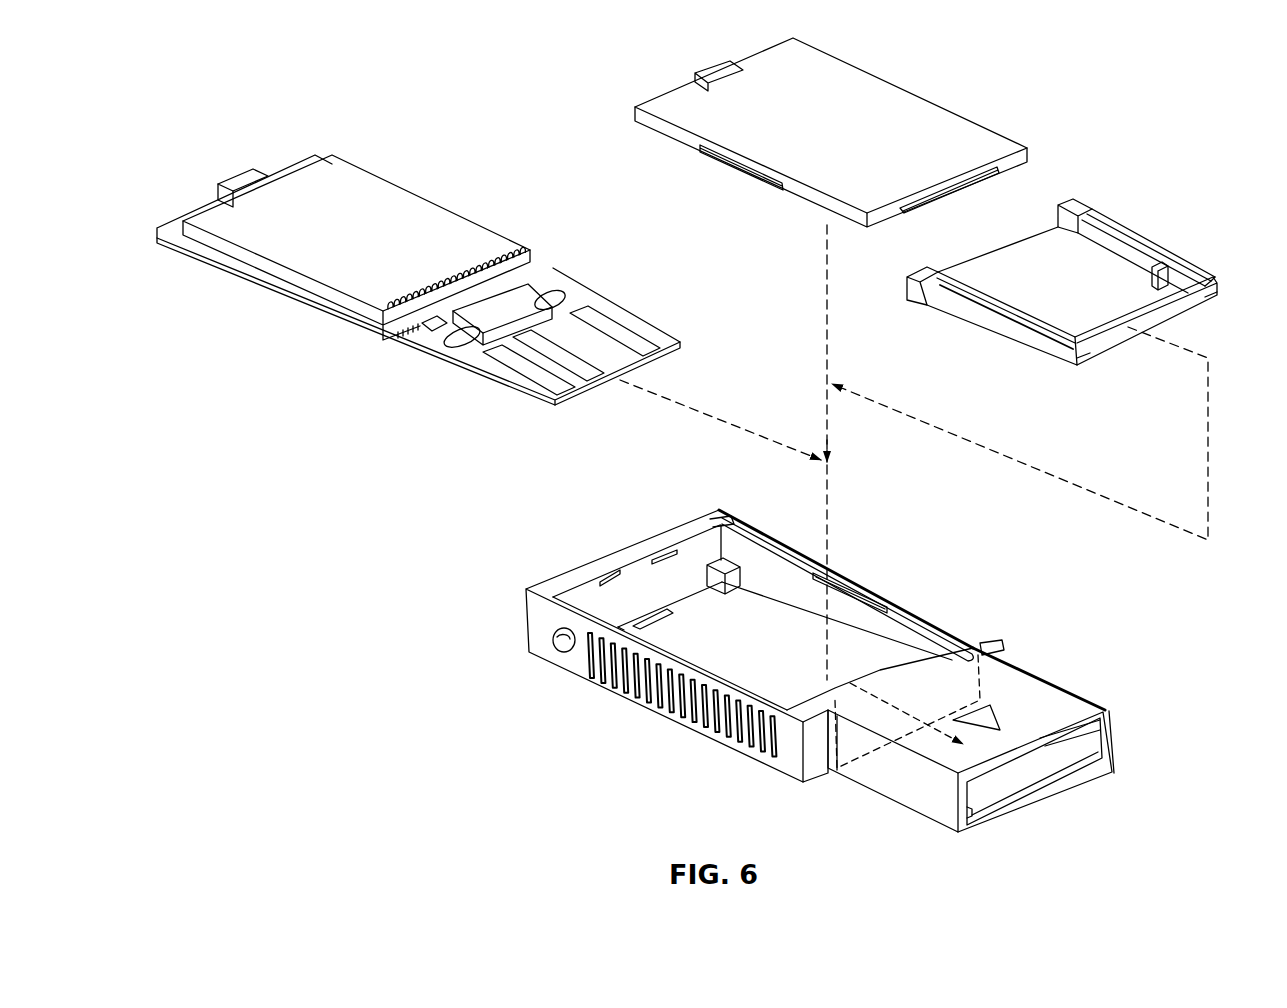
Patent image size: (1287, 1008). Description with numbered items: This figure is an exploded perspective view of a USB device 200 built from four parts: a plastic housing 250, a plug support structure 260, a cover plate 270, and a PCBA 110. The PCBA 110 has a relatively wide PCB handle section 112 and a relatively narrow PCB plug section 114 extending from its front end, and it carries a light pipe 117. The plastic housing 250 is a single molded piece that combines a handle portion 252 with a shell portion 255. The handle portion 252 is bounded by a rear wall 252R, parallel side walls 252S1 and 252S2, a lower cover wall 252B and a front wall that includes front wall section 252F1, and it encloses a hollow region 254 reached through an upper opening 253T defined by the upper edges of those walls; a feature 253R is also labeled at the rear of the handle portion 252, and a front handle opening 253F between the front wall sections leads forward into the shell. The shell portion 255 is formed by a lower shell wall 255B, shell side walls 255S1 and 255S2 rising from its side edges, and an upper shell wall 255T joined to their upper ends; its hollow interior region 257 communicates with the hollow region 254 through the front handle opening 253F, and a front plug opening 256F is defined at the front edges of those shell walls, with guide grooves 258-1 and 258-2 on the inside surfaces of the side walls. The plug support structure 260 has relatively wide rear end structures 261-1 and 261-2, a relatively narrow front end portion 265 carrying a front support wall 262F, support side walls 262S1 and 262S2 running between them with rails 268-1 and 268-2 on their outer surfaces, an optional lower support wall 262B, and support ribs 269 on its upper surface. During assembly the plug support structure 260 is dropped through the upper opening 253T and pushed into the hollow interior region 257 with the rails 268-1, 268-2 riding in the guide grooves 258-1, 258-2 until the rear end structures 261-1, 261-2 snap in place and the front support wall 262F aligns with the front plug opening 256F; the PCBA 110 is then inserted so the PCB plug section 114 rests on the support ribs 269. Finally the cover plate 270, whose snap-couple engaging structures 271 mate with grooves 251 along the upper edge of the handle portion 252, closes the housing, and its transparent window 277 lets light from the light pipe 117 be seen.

The USB device 200 is at (207, 88).
The PCBA 110 is at (200, 163).
The PCB handle section 112 is at (278, 297).
The PCB plug section 114 is at (457, 358).
The light pipe 117 is at (242, 176).
The cover plate 270 is at (881, 76).
The snap-couple engaging structures 271 is at (985, 170).
The window 277 is at (716, 70).
The plug support structure 260 is at (1170, 233).
The rear end structure 261-1 is at (924, 263).
The rear end structure 261-2 is at (1080, 198).
The lower support wall 262B is at (1044, 287).
The support side wall 262S1 is at (1000, 316).
The support side wall 262S2 is at (1118, 245).
The front support wall 262F is at (1104, 340).
The front end portion 265 is at (1209, 270).
The rail 268-1 is at (1090, 365).
The rail 268-2 is at (1222, 296).
The support ribs 269 is at (1158, 284).
The plastic housing 250 is at (982, 528).
The grooves 251 is at (840, 580).
The handle portion 252 is at (880, 578).
The rear wall 252R is at (692, 548).
The lower cover wall 252B is at (745, 617).
The side wall 252S1 is at (785, 758).
The side wall 252S2 is at (928, 635).
The front wall section 252F1 is at (818, 775).
The upper opening 253T is at (736, 520).
The rear notch 253R is at (617, 562).
The front handle opening 253F is at (1008, 660).
The hollow region 254 is at (808, 669).
The shell portion 255 is at (1057, 686).
The upper shell wall 255T is at (1058, 708).
The shell side wall 255S1 is at (903, 785).
The shell side wall 255S2 is at (1112, 740).
The lower shell wall 255B is at (986, 809).
The front plug opening 256F is at (1070, 770).
The hollow interior region 257 is at (984, 789).
The guide groove 258-1 is at (975, 832).
The guide groove 258-2 is at (1103, 745).